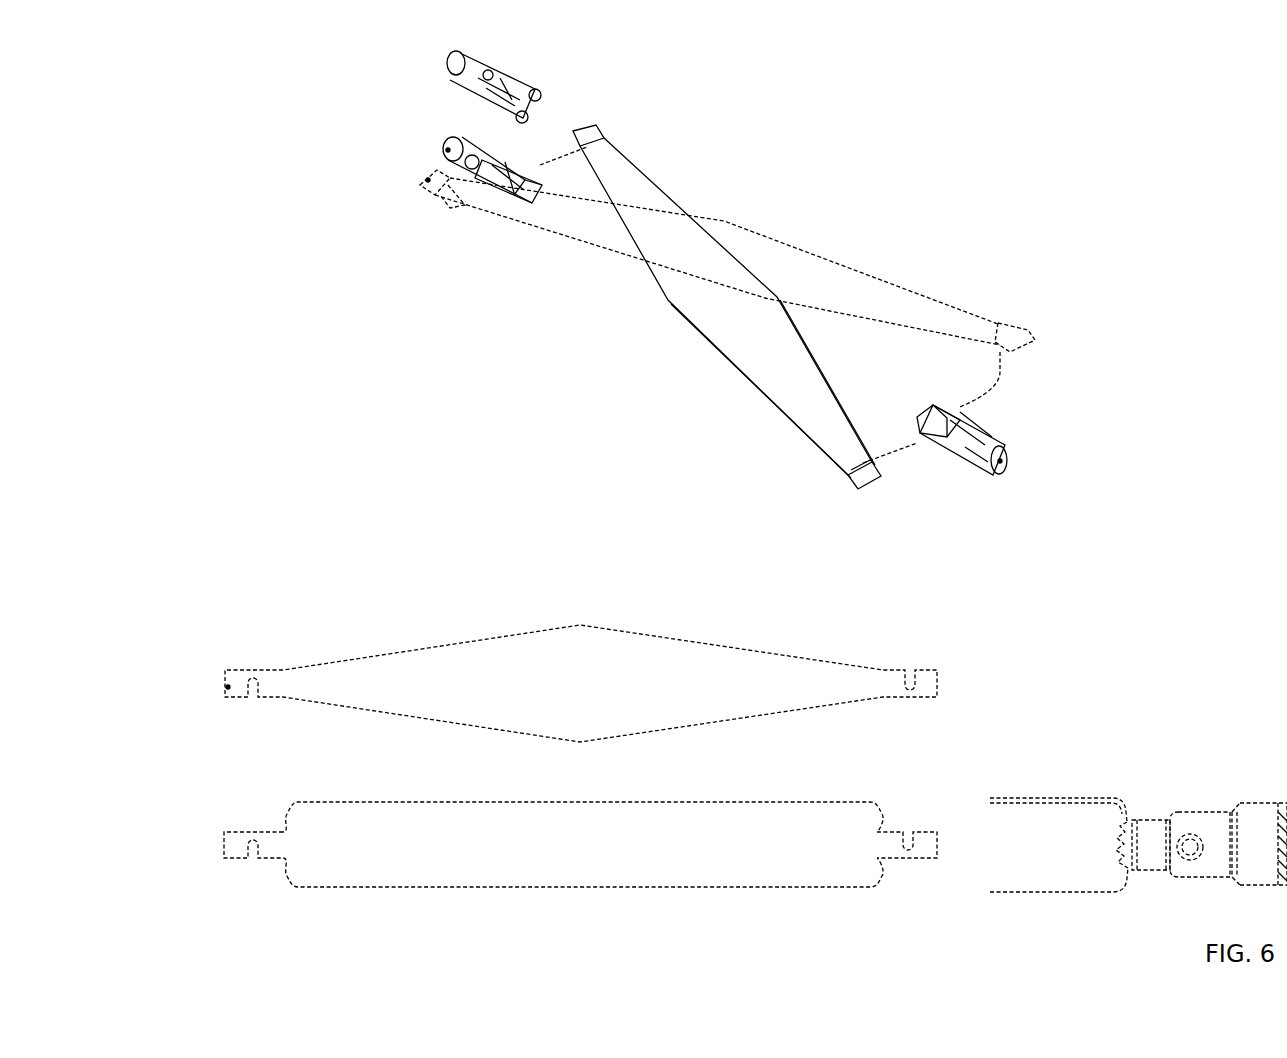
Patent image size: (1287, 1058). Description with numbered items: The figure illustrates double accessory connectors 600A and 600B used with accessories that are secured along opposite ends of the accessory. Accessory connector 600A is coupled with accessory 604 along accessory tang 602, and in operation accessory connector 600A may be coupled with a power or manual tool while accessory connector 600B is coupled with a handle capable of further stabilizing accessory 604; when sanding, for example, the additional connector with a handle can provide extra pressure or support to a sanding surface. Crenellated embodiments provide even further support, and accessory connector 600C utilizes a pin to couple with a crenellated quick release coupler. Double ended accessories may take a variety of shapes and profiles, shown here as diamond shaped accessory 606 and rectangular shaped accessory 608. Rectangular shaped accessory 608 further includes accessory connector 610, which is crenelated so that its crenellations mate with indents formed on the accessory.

The accessory connector 600A is at (448, 150).
The accessory connector 600B is at (1008, 460).
The accessory connector 600C is at (513, 88).
The accessory tang 602 is at (428, 180).
The accessory 604 is at (818, 412).
The diamond shaped accessory 606 is at (227, 686).
The rectangular shaped accessory 608 is at (212, 848).
The accessory connector 610 is at (1187, 812).